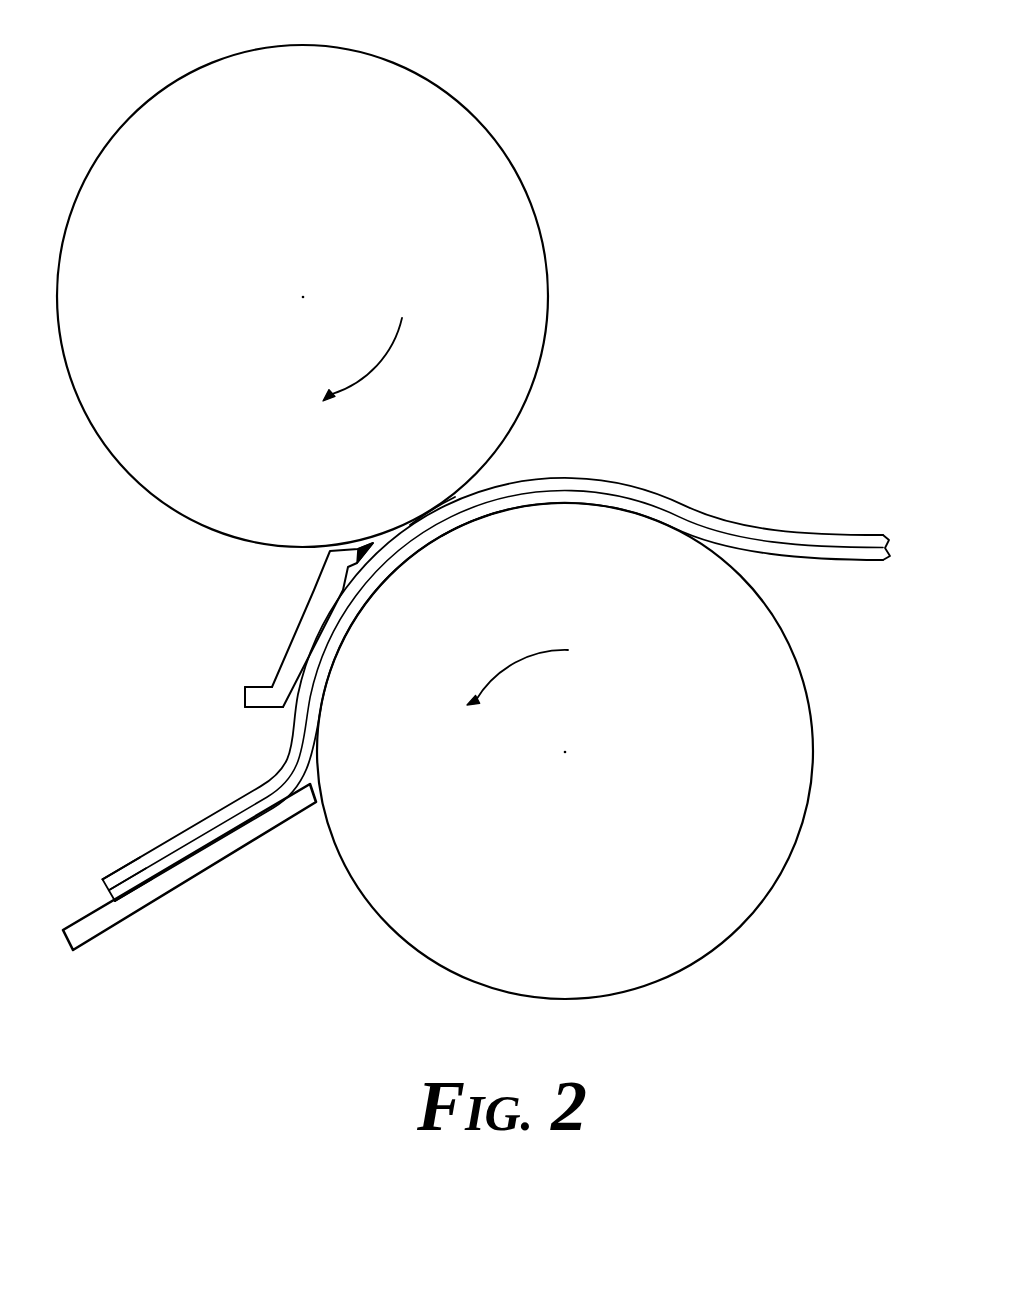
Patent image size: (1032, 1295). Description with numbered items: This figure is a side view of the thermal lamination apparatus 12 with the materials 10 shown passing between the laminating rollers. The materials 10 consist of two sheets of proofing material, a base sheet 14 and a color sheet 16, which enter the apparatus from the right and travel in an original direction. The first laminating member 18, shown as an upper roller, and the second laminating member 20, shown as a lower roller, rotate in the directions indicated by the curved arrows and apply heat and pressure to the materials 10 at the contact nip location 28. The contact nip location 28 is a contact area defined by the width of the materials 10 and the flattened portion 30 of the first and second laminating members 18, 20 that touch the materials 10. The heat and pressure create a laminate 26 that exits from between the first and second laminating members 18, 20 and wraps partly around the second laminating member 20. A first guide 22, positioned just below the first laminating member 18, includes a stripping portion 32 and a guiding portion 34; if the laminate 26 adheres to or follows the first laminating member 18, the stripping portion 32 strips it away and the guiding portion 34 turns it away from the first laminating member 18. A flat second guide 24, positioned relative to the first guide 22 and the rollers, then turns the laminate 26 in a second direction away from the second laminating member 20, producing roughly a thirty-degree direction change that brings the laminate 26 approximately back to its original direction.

The materials 10 is at (794, 522).
The thermal lamination apparatus 12 is at (598, 272).
The base sheet 14 is at (861, 557).
The color sheet 16 is at (869, 538).
The first laminating member 18 is at (484, 131).
The second laminating member 20 is at (710, 942).
The first guide 22 is at (290, 608).
The second guide 24 is at (222, 858).
The laminate 26 is at (123, 870).
The contact nip location 28 is at (423, 510).
The flattened portion 30 is at (488, 525).
The stripping portion 32 is at (356, 543).
The guiding portion 34 is at (285, 665).